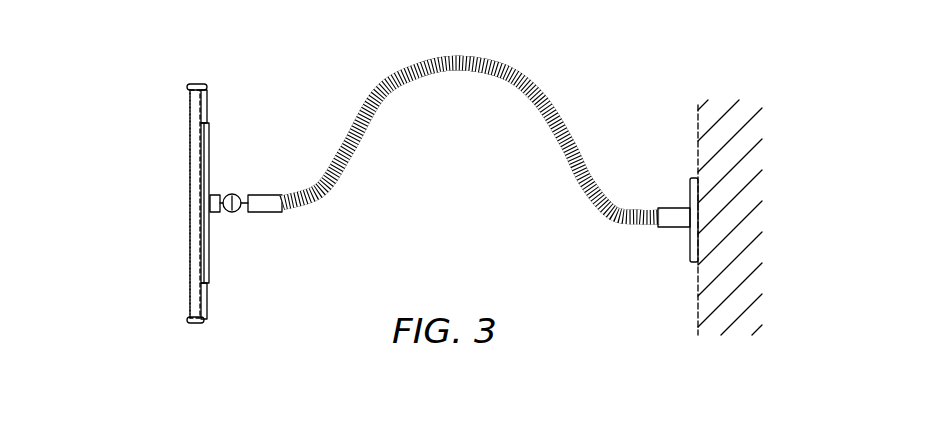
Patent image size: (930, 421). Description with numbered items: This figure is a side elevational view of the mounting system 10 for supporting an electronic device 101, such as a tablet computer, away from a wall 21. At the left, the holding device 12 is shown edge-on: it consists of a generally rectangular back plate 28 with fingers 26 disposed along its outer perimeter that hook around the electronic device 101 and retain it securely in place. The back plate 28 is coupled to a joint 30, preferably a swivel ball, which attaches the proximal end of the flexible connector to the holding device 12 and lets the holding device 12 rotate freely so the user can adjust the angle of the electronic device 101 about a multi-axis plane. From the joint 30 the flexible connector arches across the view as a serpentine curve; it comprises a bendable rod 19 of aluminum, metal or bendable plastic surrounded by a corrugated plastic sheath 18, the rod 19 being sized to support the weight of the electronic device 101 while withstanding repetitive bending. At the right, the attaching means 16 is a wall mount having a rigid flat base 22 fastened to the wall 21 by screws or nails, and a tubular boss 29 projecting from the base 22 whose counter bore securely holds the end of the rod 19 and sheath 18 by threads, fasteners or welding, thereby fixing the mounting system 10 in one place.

The mounting system 10 is at (234, 242).
The holding device 12 is at (157, 60).
The electronic device 101 is at (190, 165).
The attaching means 16 is at (642, 249).
The corrugated plastic sheath 18 is at (557, 138).
The flexible rod 19 is at (457, 73).
The wall 21 is at (743, 142).
The base 22 is at (690, 190).
The fingers 26 is at (205, 85).
The back plate 28 is at (210, 248).
The tubular boss 29 is at (658, 230).
The joint 30 is at (233, 194).